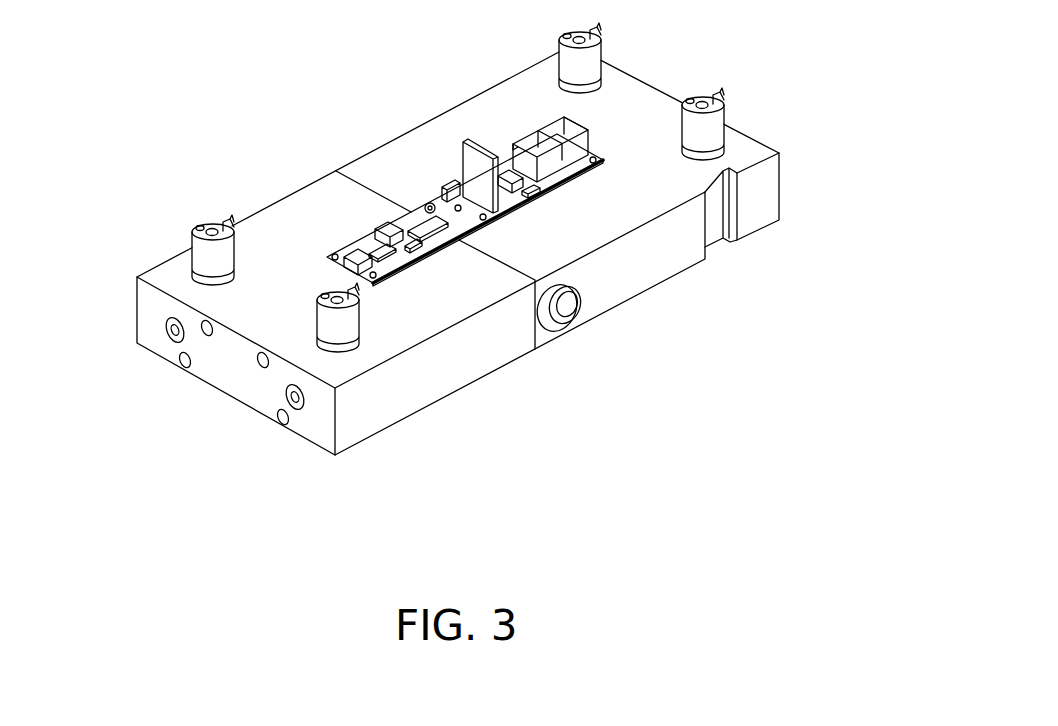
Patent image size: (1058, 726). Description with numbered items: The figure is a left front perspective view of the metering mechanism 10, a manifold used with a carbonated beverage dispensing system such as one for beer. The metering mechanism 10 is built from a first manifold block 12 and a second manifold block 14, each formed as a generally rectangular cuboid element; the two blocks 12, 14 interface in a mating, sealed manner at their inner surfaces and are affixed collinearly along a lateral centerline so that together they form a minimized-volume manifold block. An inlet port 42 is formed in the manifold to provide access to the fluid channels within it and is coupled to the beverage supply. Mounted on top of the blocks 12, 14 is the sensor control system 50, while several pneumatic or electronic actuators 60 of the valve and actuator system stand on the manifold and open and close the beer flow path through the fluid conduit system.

The metering mechanism 10 is at (188, 466).
The first manifold block 12 is at (678, 262).
The second manifold block 14 is at (402, 407).
The inlet port 42 is at (573, 332).
The sensor control system 50 is at (403, 189).
The actuators 60 is at (600, 43).